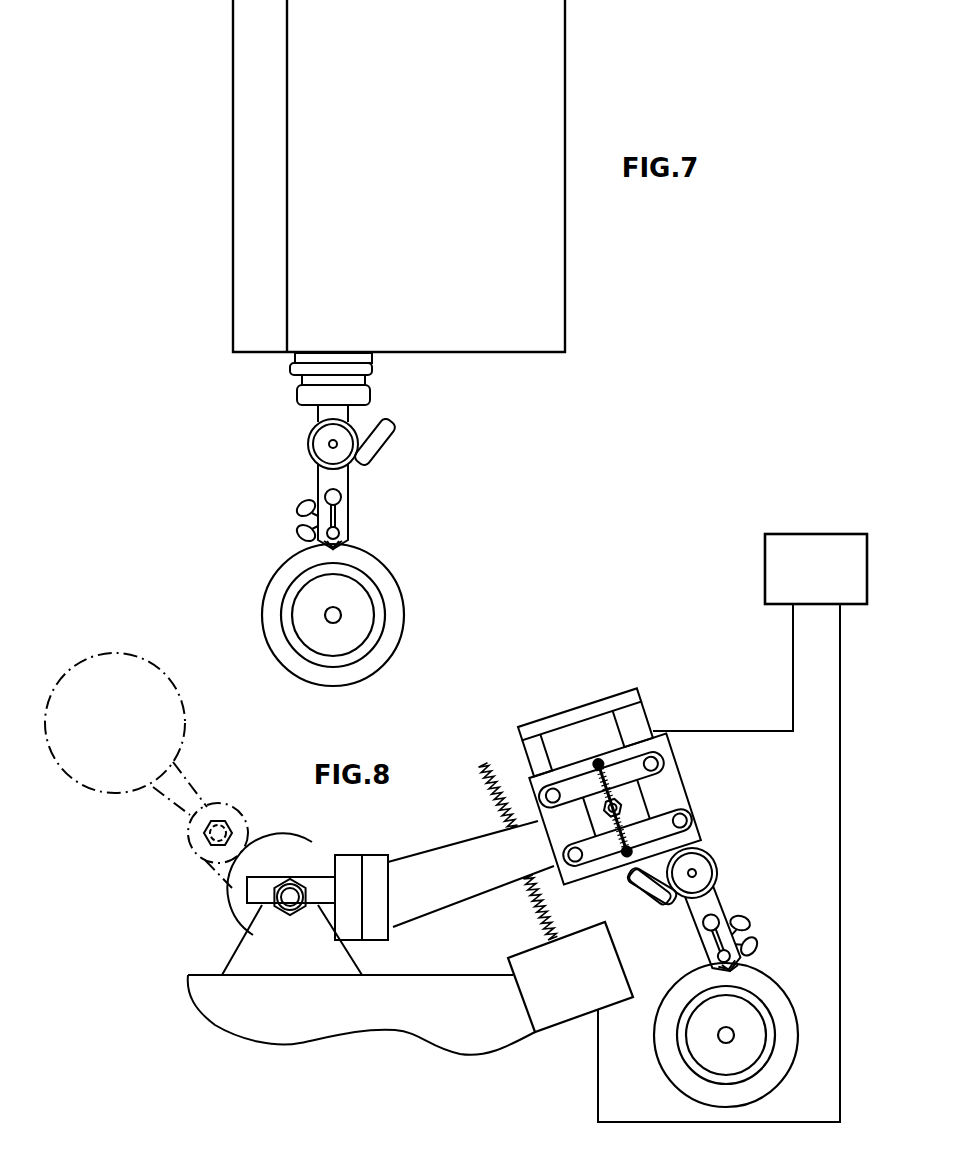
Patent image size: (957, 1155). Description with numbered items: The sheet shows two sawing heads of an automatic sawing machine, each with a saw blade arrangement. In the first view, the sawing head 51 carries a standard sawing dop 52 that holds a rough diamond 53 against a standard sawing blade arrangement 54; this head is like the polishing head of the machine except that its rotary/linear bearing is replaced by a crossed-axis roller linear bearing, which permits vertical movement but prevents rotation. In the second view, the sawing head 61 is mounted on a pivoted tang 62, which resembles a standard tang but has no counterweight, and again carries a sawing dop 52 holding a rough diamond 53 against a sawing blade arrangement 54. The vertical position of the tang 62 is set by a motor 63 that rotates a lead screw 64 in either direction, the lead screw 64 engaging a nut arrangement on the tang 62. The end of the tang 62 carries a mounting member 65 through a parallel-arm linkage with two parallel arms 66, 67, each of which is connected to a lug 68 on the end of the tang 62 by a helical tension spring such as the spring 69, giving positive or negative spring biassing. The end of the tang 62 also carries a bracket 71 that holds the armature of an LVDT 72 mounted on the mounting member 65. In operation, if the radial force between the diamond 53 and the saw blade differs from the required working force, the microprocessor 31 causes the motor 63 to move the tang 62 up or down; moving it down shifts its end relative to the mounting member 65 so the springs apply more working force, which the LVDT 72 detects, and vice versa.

In FIG. 8, the microprocessor 31 is at (771, 569).
In FIG. 7, the sawing head 51 is at (566, 288).
In FIG. 7, the sawing dop 52 is at (349, 478).
In FIG. 8, the sawing dop 52 is at (718, 905).
In FIG. 7, the rough diamond 53 is at (352, 540).
In FIG. 8, the rough diamond 53 is at (735, 972).
In FIG. 7, the sawing blade arrangement 54 is at (397, 627).
In FIG. 8, the sawing blade arrangement 54 is at (678, 1077).
In FIG. 8, the sawing head 61 is at (631, 795).
In FIG. 8, the tang 62 is at (445, 858).
In FIG. 8, the motor 63 is at (556, 1013).
In FIG. 8, the lead screw 64 is at (533, 903).
In FIG. 8, the mounting member 65 is at (615, 809).
In FIG. 8, the parallel arm 66 is at (601, 779).
In FIG. 8, the parallel arm 67 is at (627, 837).
In FIG. 8, the lug 68 is at (540, 813).
In FIG. 8, the helical tension spring 69 is at (612, 807).
In FIG. 8, the bracket 71 is at (579, 714).
In FIG. 8, the LVDT 72 is at (587, 739).